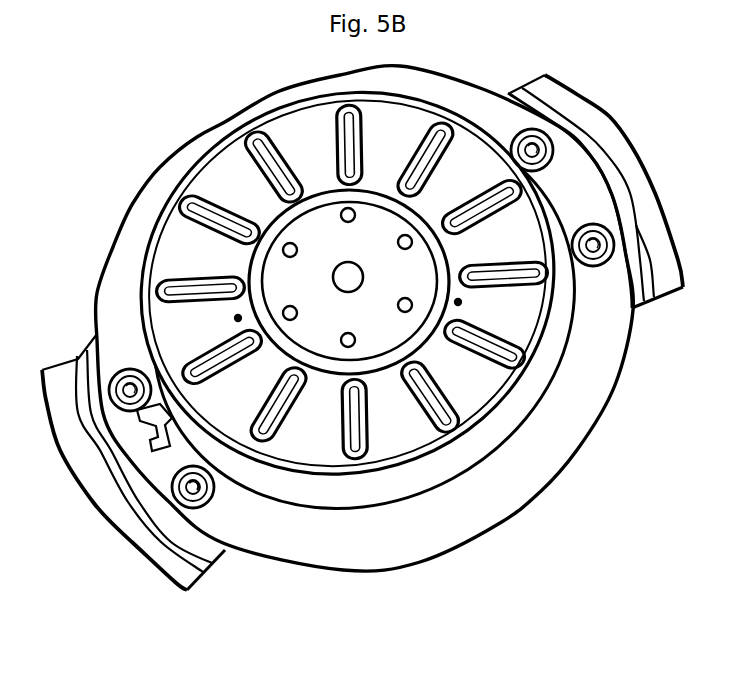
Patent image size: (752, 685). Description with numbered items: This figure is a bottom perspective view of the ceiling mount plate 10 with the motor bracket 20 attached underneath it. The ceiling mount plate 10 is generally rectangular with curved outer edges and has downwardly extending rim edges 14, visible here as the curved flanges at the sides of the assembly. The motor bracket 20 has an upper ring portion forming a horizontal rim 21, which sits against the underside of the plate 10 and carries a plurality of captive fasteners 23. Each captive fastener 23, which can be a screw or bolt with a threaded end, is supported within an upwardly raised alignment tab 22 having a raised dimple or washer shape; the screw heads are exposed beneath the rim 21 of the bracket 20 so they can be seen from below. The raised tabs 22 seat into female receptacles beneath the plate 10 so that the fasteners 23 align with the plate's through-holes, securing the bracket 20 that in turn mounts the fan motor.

The ceiling mount plate 10 is at (221, 577).
The rim edges 14 is at (610, 118).
The motor bracket 20 is at (413, 128).
The horizontal rim 21 is at (477, 509).
The alignment tabs 22 is at (590, 267).
The captive fastener 23 is at (175, 490).